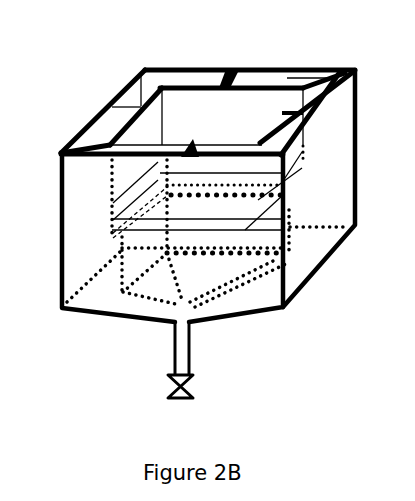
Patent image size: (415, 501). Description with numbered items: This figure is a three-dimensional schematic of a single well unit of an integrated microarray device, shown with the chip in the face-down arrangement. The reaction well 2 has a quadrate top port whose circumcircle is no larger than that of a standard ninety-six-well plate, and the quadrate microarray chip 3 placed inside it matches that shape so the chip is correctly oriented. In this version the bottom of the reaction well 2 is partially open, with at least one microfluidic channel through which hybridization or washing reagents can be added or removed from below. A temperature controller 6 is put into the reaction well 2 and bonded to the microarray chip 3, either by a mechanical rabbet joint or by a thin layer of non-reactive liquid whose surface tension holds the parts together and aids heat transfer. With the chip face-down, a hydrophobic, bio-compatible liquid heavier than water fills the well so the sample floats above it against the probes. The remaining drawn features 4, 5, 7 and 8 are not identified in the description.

The reaction well 2 is at (230, 108).
The microarray chip 3 is at (167, 209).
The hinge 4 is at (141, 88).
The latch 5 is at (282, 137).
The temperature controller 6 is at (302, 165).
The container body 7 is at (112, 239).
The drain funnel 8 is at (212, 275).